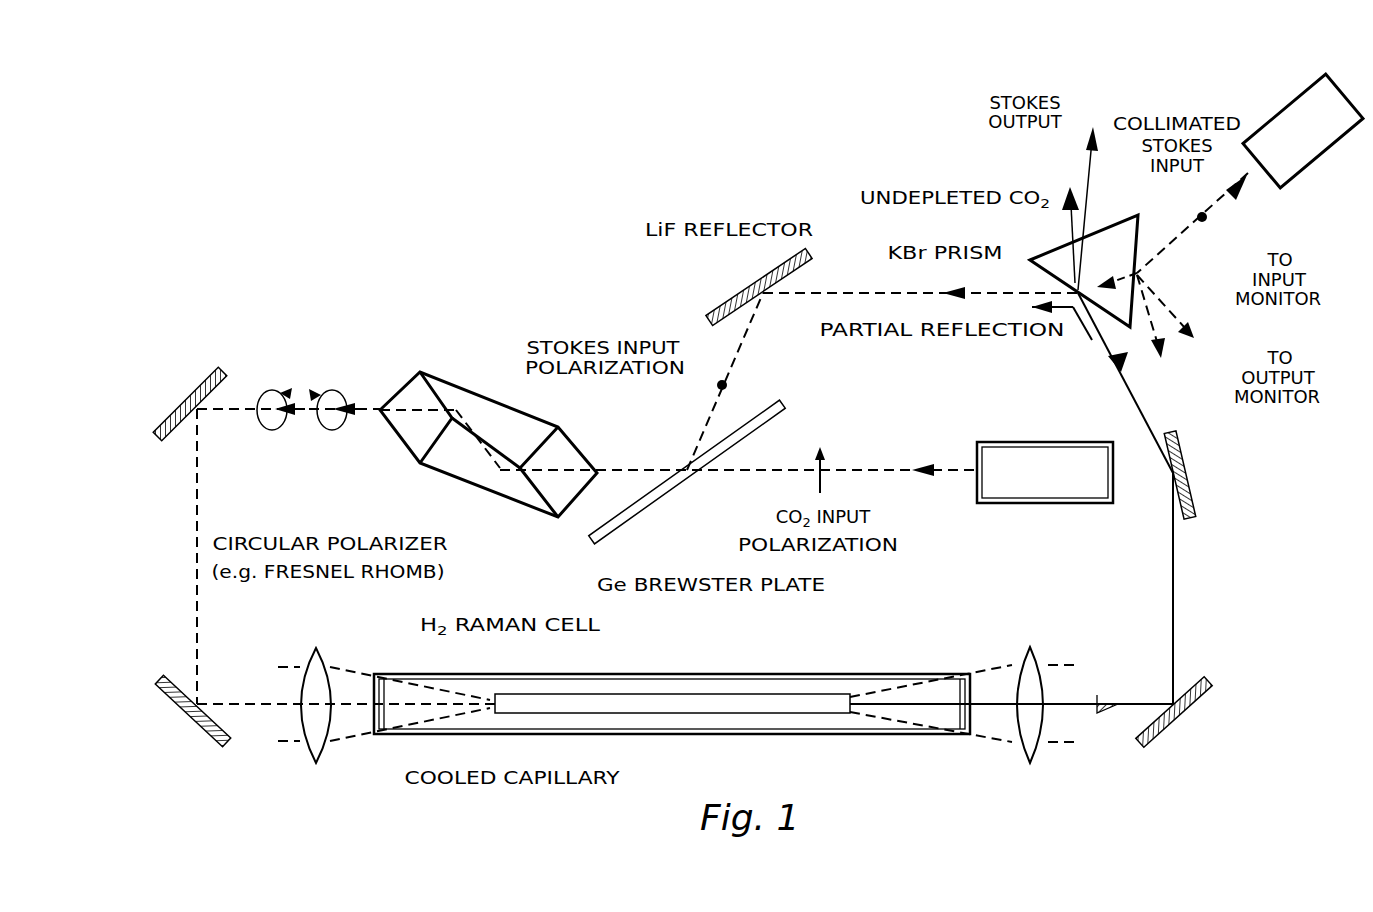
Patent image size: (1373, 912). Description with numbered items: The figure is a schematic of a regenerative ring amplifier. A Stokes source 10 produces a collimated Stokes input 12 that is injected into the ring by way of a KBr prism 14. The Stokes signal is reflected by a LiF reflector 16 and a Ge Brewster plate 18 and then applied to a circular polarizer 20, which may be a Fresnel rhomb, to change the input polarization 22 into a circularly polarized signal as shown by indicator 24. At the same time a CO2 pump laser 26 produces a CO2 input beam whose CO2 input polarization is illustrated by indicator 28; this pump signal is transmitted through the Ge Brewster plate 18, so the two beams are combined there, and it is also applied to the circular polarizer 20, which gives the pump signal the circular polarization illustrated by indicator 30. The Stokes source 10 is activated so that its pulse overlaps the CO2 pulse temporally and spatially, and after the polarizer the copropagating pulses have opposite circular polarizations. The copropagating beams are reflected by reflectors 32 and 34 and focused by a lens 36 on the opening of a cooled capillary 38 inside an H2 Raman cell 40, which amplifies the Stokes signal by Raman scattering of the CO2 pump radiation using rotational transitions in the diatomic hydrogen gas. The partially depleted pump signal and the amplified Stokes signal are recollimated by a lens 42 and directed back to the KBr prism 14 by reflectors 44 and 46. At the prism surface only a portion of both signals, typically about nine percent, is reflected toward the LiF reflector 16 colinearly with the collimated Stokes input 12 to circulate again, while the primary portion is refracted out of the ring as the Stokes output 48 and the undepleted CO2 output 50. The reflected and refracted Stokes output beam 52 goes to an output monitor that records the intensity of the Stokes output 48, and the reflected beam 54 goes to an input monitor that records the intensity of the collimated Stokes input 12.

The Stokes source 10 is at (1317, 163).
The collimated Stokes input 12 is at (1210, 204).
The KBr prism 14 is at (1035, 258).
The LiF reflector 16 is at (762, 283).
The Ge Brewster plate 18 is at (637, 515).
The circular polarizer 20 is at (465, 480).
The input polarization 22 is at (717, 403).
The indicator 24 is at (280, 393).
The CO2 pump laser 26 is at (1033, 442).
The indicator 28 is at (822, 478).
The indicator 30 is at (320, 395).
The reflector 32 is at (195, 392).
The reflector 34 is at (195, 720).
The lens 36 is at (310, 752).
The cooled capillary 38 is at (553, 716).
The H2 Raman cell 40 is at (575, 670).
The lens 42 is at (1033, 653).
The reflector 44 is at (1173, 725).
The reflector 46 is at (1190, 480).
The Stokes output 48 is at (1087, 160).
The undepleted CO2 output 50 is at (1070, 223).
The reflected and refracted Stokes output beam 52 is at (1160, 347).
The reflected beam 54 is at (1160, 300).